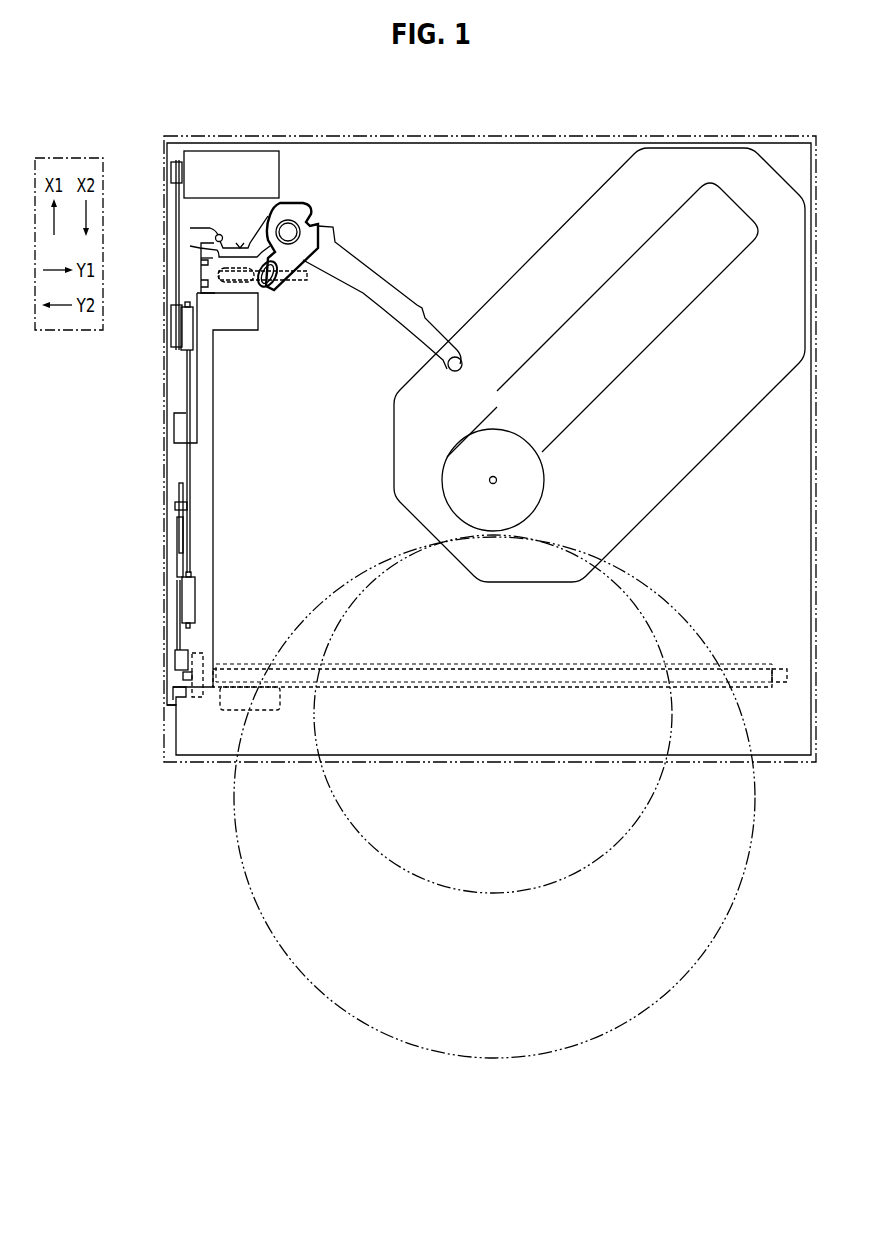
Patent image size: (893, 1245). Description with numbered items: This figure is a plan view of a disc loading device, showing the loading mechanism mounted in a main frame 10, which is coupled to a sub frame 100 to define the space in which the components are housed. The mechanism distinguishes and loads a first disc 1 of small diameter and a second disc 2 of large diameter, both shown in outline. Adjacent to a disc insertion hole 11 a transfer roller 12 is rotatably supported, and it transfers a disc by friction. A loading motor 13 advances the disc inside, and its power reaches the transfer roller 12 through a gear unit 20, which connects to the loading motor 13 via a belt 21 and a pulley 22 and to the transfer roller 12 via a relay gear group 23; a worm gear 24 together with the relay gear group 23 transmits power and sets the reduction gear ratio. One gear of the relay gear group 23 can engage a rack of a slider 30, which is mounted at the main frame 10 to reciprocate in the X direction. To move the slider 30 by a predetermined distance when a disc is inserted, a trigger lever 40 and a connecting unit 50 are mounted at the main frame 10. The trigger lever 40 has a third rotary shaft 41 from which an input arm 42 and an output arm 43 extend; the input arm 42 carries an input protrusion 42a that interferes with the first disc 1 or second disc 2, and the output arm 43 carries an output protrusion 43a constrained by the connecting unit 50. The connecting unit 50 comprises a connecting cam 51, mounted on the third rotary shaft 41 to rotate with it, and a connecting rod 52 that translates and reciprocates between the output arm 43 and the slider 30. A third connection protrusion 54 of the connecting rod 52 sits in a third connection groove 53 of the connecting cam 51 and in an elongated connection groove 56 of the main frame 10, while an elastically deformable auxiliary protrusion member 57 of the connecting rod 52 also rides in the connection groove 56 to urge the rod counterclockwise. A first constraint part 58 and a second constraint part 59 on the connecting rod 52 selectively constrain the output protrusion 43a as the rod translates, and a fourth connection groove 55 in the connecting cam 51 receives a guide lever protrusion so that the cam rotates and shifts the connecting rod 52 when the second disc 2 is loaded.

The first disc 1 is at (640, 807).
The second disc 2 is at (745, 825).
The main frame 10 is at (500, 148).
The disc insertion hole 11 is at (219, 760).
The transfer roller 12 is at (515, 690).
The loading motor 13 is at (228, 153).
The gear unit 20 is at (205, 491).
The belt 21 is at (173, 197).
The pulley 22 is at (172, 168).
The relay gear group 23 is at (180, 608).
The worm gear 24 is at (193, 347).
The slider 30 is at (184, 417).
The trigger lever 40 is at (399, 294).
The third rotary shaft 41 is at (302, 220).
The input arm 42 is at (403, 303).
The input protrusion 42a is at (461, 356).
The output arm 43 is at (200, 238).
The output protrusion 43a is at (216, 234).
The connecting unit 50 is at (255, 240).
The connecting cam 51 is at (292, 228).
The connecting rod 52 is at (207, 285).
The third connection groove 53 is at (281, 281).
The third connection protrusion 54 is at (269, 288).
The fourth connection groove 55 is at (318, 223).
The connection groove 56 is at (308, 281).
The auxiliary protrusion member 57 is at (238, 284).
The first constraint part 58 is at (240, 243).
The second constraint part 59 is at (200, 265).
The sub frame 100 is at (594, 136).